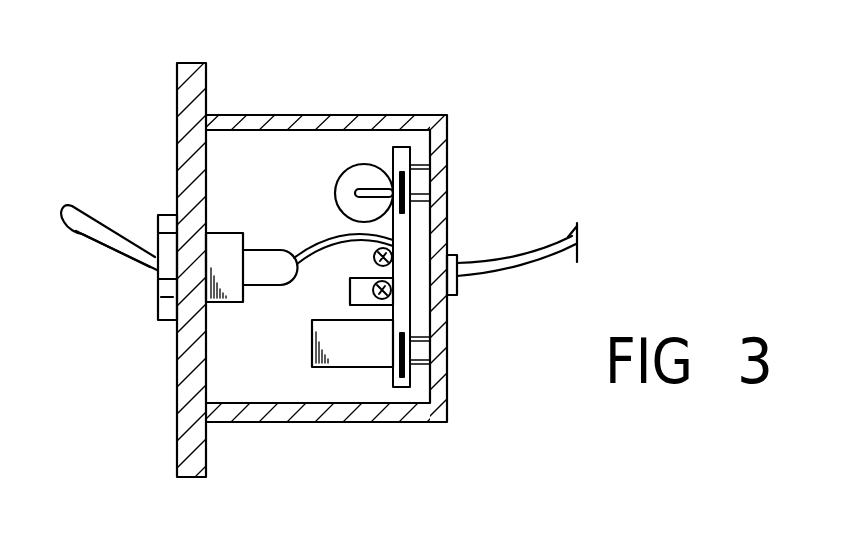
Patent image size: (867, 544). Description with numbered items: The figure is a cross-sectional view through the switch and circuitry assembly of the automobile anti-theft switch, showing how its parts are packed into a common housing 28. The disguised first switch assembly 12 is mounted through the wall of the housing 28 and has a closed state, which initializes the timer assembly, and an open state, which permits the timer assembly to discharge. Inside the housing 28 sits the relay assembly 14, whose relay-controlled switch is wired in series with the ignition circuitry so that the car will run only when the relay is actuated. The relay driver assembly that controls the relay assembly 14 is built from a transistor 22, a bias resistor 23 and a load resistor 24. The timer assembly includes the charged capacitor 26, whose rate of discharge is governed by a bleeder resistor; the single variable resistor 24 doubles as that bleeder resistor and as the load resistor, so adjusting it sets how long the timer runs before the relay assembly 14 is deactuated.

The disguised first switch assembly 12 is at (170, 288).
The relay assembly 14 is at (353, 353).
The transistor 22 is at (363, 295).
The bias resistor 23 is at (397, 237).
The load resistor 24 is at (395, 282).
The capacitor 26 is at (362, 173).
The housing 28 is at (440, 115).